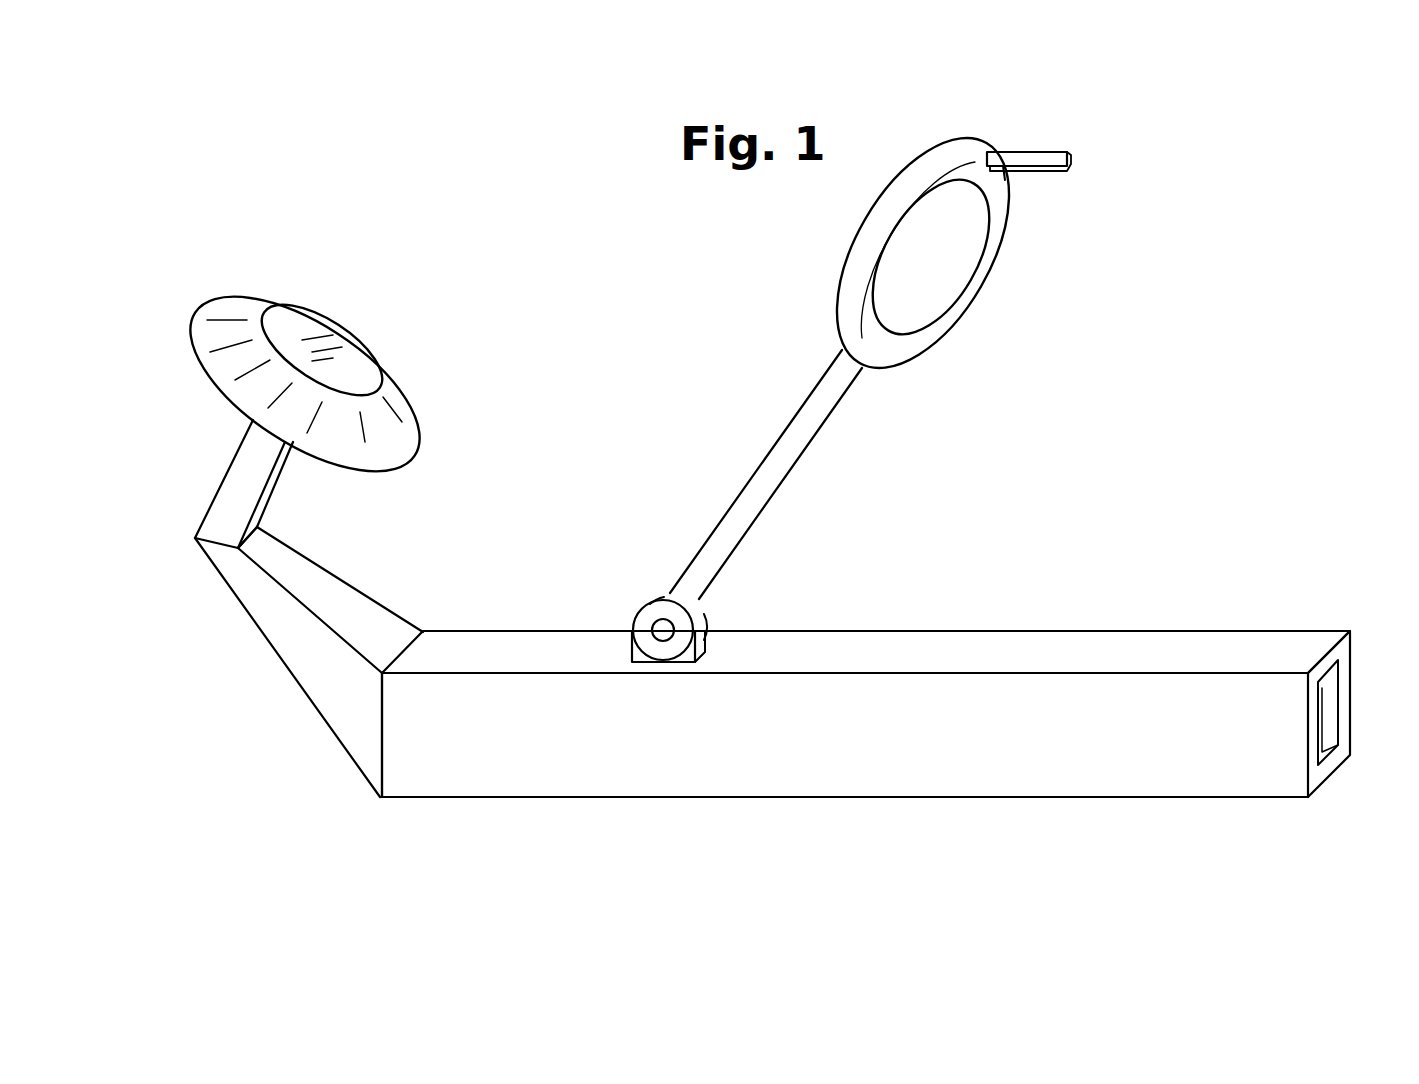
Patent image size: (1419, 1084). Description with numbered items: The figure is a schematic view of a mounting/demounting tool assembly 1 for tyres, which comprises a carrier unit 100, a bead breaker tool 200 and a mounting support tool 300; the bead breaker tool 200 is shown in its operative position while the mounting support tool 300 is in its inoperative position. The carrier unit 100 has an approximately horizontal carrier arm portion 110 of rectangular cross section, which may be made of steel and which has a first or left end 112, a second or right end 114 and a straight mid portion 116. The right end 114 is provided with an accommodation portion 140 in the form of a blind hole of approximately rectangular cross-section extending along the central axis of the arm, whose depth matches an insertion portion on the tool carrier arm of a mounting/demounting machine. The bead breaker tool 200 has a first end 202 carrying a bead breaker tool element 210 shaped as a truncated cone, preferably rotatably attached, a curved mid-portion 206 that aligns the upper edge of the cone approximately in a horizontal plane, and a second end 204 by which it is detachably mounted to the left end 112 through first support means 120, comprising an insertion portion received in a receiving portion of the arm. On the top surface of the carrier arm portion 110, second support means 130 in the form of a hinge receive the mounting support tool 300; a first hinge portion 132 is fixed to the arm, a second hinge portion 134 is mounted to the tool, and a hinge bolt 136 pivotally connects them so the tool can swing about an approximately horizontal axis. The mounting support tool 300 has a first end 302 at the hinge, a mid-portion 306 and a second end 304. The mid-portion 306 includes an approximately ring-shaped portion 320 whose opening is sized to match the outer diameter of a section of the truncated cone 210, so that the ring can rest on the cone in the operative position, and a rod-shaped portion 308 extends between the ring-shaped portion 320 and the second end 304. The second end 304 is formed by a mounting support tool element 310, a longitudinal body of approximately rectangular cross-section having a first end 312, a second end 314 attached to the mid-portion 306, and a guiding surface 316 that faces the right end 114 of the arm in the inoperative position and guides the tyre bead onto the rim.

The mounting/demounting tool assembly 1 is at (1177, 293).
The carrier unit 100 is at (1072, 525).
The carrier arm portion 110 is at (705, 810).
The first or left end 112 is at (422, 778).
The second or right end 114 is at (1282, 778).
The straight mid portion 116 is at (810, 780).
The first support means 120 is at (378, 780).
The second support means 130 is at (590, 555).
The first hinge portion 132 is at (630, 628).
The second hinge portion 134 is at (705, 622).
The hinge bolt 136 is at (660, 627).
The accommodation portion 140 is at (1332, 705).
The bead breaker tool 200 is at (240, 793).
The first end 202 is at (243, 507).
The second end 204 is at (315, 707).
The mid-portion 206 is at (232, 569).
The bead breaker tool element 210 is at (232, 327).
The mounting support tool 300 is at (652, 253).
The first end 302 is at (1002, 135).
The second end 304 is at (710, 592).
The mid-portion 306 is at (820, 312).
The rod-shaped portion 308 is at (777, 465).
The mounting support tool element 310 is at (1042, 190).
The first end 312 is at (1073, 153).
The second end 314 is at (1000, 158).
The guiding surface 316 is at (1053, 168).
The ring-shaped portion 320 is at (927, 337).